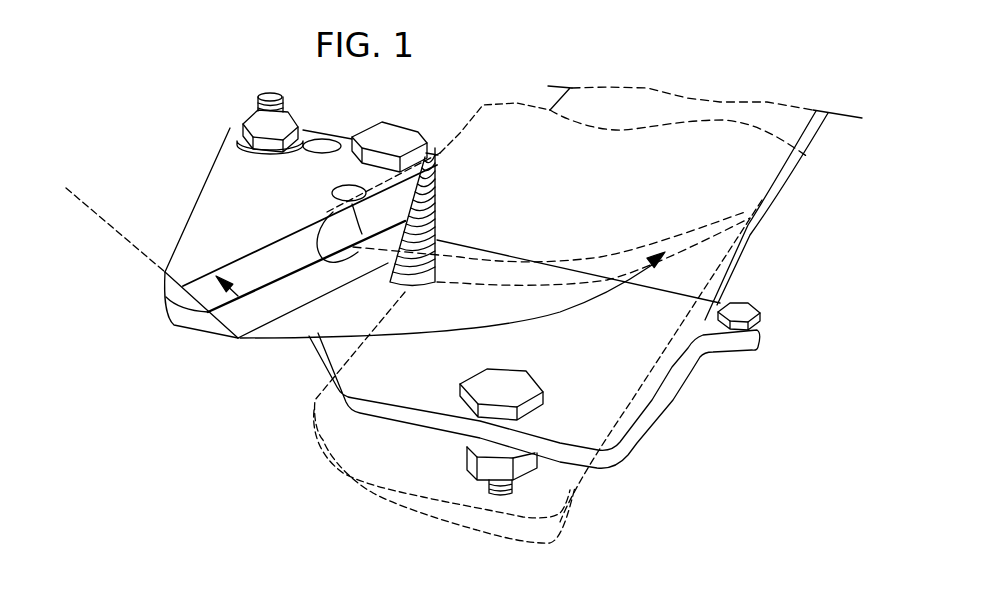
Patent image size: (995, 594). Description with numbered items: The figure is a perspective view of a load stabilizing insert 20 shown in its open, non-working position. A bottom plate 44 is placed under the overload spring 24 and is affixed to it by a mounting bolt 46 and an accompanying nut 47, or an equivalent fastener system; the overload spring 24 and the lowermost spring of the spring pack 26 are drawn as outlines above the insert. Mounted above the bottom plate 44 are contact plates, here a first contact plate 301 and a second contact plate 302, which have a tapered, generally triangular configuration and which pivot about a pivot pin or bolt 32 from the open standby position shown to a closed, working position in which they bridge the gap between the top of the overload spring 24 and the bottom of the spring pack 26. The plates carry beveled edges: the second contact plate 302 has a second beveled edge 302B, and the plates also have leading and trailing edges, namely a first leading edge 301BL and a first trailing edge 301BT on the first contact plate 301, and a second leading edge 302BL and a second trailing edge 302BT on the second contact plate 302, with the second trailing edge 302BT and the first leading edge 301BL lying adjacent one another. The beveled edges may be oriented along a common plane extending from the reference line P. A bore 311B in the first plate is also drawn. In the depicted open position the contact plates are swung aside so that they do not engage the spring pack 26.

The load stabilizing insert 20 is at (288, 386).
The overload spring 24 is at (738, 252).
The spring pack 26 is at (764, 214).
The first contact plate 301 is at (210, 203).
The second contact plate 302 is at (200, 322).
The first trailing edge 301BT is at (325, 262).
The first leading edge 301BL is at (262, 254).
The second trailing edge 302BT is at (397, 267).
The second leading edge 302BL is at (330, 282).
The second beveled edge 302B is at (243, 316).
The first plate bore 311B is at (299, 254).
The pivot pin or bolt 32 is at (388, 136).
The bottom plate 44 is at (613, 380).
The mounting bolt 46 is at (510, 392).
The nut 47 is at (460, 468).
The reference line P is at (92, 212).